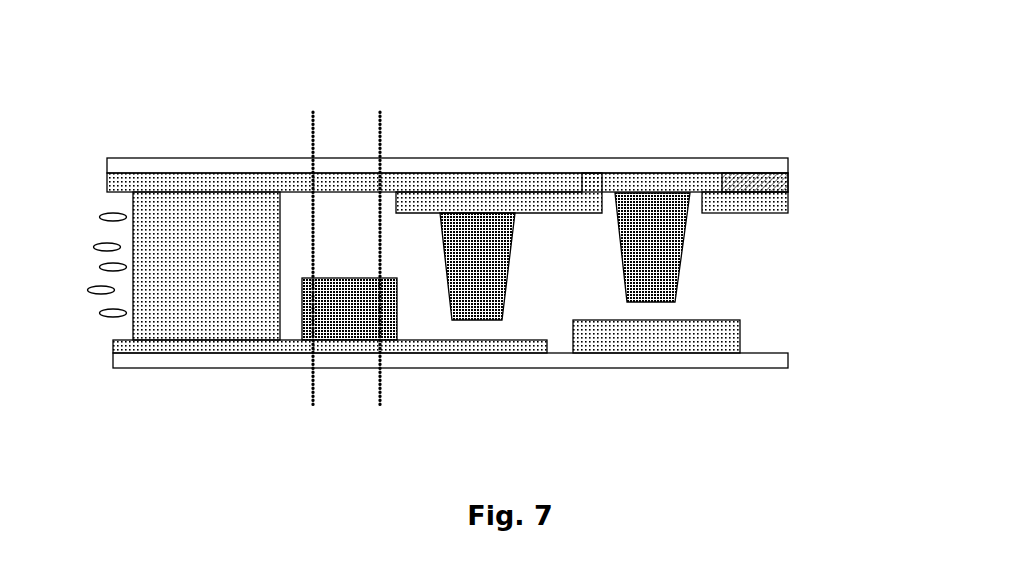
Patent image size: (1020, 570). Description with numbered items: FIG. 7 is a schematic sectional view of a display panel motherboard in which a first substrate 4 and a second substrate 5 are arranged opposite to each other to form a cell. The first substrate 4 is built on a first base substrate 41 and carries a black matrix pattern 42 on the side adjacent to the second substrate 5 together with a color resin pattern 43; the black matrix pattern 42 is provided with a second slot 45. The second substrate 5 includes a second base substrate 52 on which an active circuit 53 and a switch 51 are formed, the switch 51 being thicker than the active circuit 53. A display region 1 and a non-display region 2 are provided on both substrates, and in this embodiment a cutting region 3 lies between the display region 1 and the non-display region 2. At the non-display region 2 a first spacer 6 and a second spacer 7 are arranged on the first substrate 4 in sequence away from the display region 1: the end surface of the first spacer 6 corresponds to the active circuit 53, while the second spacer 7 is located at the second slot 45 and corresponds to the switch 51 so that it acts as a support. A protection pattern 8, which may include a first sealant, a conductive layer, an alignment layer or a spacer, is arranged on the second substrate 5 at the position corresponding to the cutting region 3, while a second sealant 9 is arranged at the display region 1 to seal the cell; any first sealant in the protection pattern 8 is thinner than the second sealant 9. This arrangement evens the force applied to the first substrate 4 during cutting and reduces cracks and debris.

The display region 1 is at (180, 128).
The non-display region 2 is at (567, 133).
The cutting region 3 is at (340, 127).
The first substrate 4 is at (510, 200).
The first base substrate 41 is at (725, 165).
The black matrix pattern 42 is at (757, 184).
The color resin pattern 43 is at (777, 207).
The second slot 45 is at (873, 158).
The second substrate 5 is at (512, 382).
The switch 51 is at (687, 332).
The second base substrate 52 is at (687, 359).
The active circuit 53 is at (420, 342).
The first spacer 6 is at (475, 287).
The second spacer 7 is at (655, 283).
The protection pattern 8 is at (343, 327).
The second sealant 9 is at (209, 313).